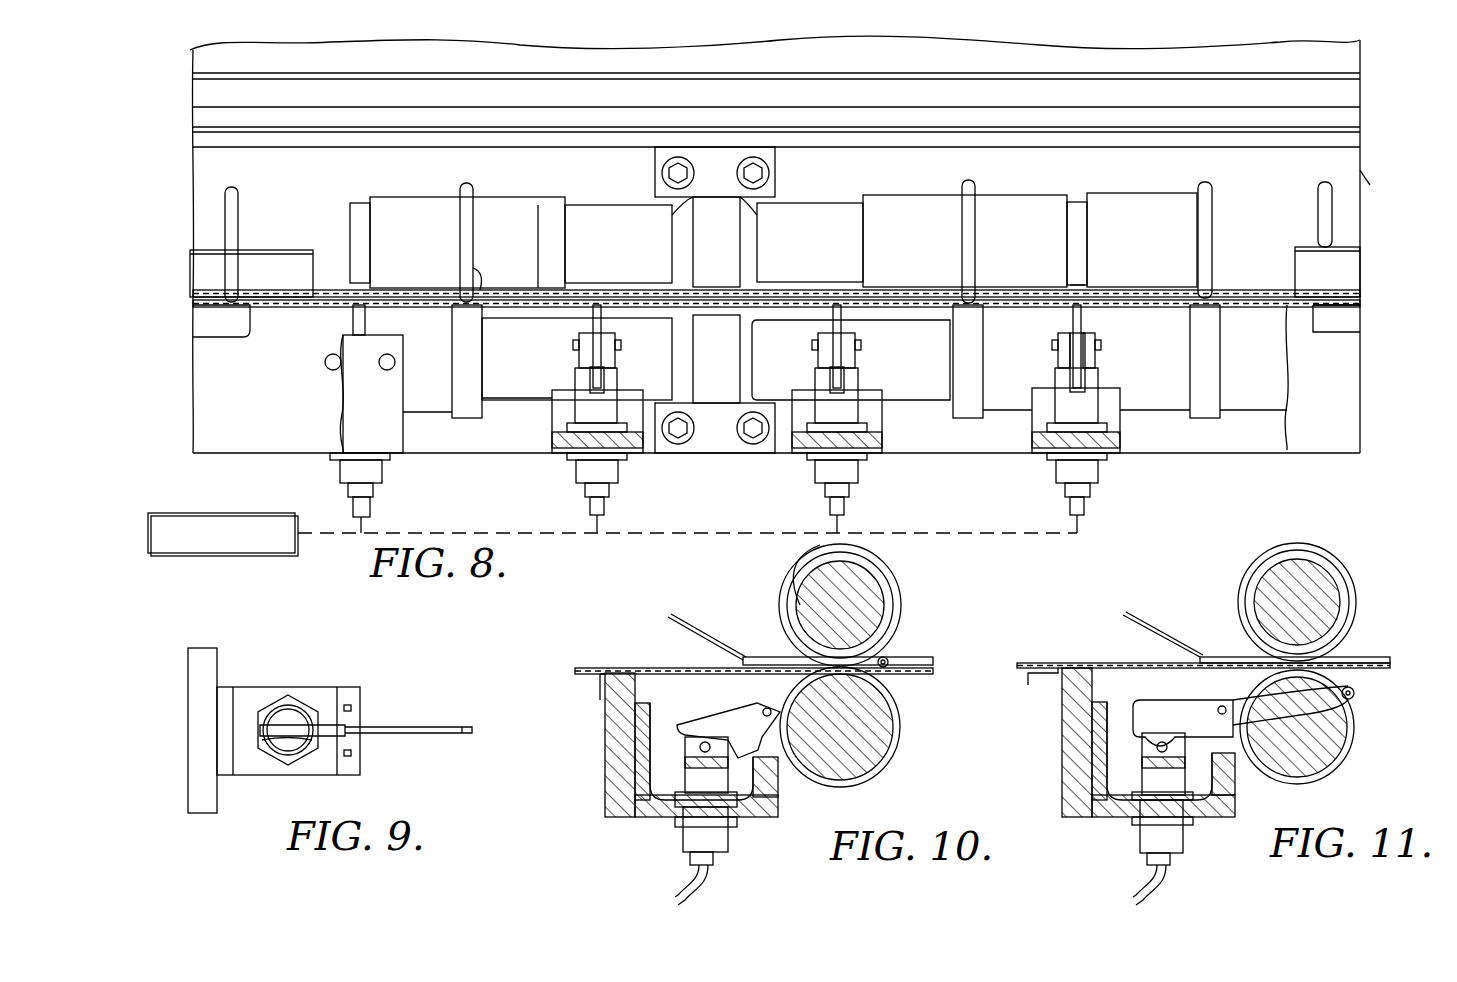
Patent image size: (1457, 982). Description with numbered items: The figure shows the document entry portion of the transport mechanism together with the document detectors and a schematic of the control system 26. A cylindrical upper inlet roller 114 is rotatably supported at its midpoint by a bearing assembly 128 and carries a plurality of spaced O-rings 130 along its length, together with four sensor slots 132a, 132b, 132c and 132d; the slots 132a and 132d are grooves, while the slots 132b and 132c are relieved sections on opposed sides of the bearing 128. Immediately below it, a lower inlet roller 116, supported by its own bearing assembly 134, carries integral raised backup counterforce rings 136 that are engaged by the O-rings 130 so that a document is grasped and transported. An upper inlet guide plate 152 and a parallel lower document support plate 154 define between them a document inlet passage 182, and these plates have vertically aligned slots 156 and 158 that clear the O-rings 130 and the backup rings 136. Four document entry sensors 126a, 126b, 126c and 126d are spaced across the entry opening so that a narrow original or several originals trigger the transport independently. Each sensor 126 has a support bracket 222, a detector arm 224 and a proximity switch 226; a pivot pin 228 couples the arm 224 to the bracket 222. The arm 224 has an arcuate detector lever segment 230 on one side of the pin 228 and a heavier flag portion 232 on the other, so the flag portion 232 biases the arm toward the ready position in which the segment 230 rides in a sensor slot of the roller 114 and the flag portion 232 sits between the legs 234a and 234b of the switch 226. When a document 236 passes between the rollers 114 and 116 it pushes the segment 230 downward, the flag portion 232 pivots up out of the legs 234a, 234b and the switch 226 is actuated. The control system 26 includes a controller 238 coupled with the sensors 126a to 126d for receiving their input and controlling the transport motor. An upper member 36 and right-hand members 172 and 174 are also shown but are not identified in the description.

In FIG. 8, the control system 26 is at (270, 560).
In FIG. 8, the frame 36 is at (1343, 58).
In FIG. 8, the upper inlet roller 114 is at (538, 205).
In FIG. 10, the upper inlet roller 114 is at (860, 606).
In FIG. 11, the upper inlet roller 114 is at (1275, 590).
In FIG. 8, the lower inlet roller 116 is at (430, 415).
In FIG. 10, the lower inlet roller 116 is at (855, 750).
In FIG. 11, the lower inlet roller 116 is at (1315, 760).
In FIG. 9, the document entry detector 126 is at (344, 736).
In FIG. 10, the document entry detector 126 is at (677, 835).
In FIG. 11, the document entry detector 126 is at (1135, 848).
In FIG. 8, the document entry sensor 126a is at (338, 470).
In FIG. 8, the document entry sensor 126b is at (578, 470).
In FIG. 8, the document entry sensor 126c is at (813, 470).
In FIG. 8, the document entry sensor 126d is at (1079, 392).
In FIG. 8, the bearing assembly 128 is at (722, 268).
In FIG. 8, the O-rings 130 is at (232, 188).
In FIG. 10, the O-rings 130 is at (868, 560).
In FIG. 11, the O-rings 130 is at (1350, 585).
In FIG. 8, the sensor slot 132a is at (362, 200).
In FIG. 10, the sensor slot 132a is at (800, 605).
In FIG. 8, the sensor slot 132b is at (605, 203).
In FIG. 8, the sensor slot 132c is at (830, 203).
In FIG. 8, the sensor slot 132d is at (1075, 200).
In FIG. 8, the bearing assembly 134 is at (705, 420).
In FIG. 8, the backup counterforce rings 136 is at (468, 420).
In FIG. 10, the backup counterforce rings 136 is at (900, 727).
In FIG. 11, the backup counterforce rings 136 is at (1355, 740).
In FIG. 8, the upper inlet guide plate 152 is at (250, 266).
In FIG. 10, the upper inlet guide plate 152 is at (680, 628).
In FIG. 11, the upper inlet guide plate 152 is at (1145, 615).
In FIG. 8, the lower inlet document support plate 154 is at (272, 310).
In FIG. 10, the lower inlet document support plate 154 is at (640, 672).
In FIG. 11, the lower inlet document support plate 154 is at (1090, 702).
In FIG. 8, the slots 156 is at (478, 272).
In FIG. 8, the slots 158 is at (472, 315).
In FIG. 8, the right side plate 172 is at (1366, 178).
In FIG. 8, the lower right plate 174 is at (1274, 445).
In FIG. 8, the document inlet passage 182 is at (1115, 296).
In FIG. 8, the support bracket 222 is at (1033, 445).
In FIG. 9, the support bracket 222 is at (355, 762).
In FIG. 10, the support bracket 222 is at (780, 800).
In FIG. 11, the support bracket 222 is at (1225, 797).
In FIG. 8, the detector arm 224 is at (1073, 335).
In FIG. 9, the detector arm 224 is at (328, 730).
In FIG. 10, the detector arm 224 is at (748, 712).
In FIG. 11, the detector arm 224 is at (1195, 705).
In FIG. 8, the proximity switch 226 is at (1095, 405).
In FIG. 9, the proximity switch 226 is at (292, 716).
In FIG. 10, the proximity switch 226 is at (680, 772).
In FIG. 11, the proximity switch 226 is at (1145, 765).
In FIG. 8, the pivot pin 228 is at (1100, 345).
In FIG. 9, the pivot pin 228 is at (351, 710).
In FIG. 10, the pivot pin 228 is at (767, 708).
In FIG. 11, the pivot pin 228 is at (1222, 706).
In FIG. 8, the detector lever segment 230 is at (1073, 286).
In FIG. 9, the detector lever segment 230 is at (440, 727).
In FIG. 10, the detector lever segment 230 is at (890, 660).
In FIG. 11, the detector lever segment 230 is at (1355, 697).
In FIG. 9, the flag portion 232 is at (292, 742).
In FIG. 10, the flag portion 232 is at (692, 728).
In FIG. 11, the flag portion 232 is at (1152, 712).
In FIG. 8, the leg 234a is at (1060, 378).
In FIG. 9, the leg 234a is at (280, 720).
In FIG. 10, the leg 234a is at (640, 765).
In FIG. 11, the leg 234a is at (1143, 747).
In FIG. 8, the leg 234b is at (1095, 378).
In FIG. 9, the leg 234b is at (272, 745).
In FIG. 11, the document 236 is at (1070, 668).
In FIG. 8, the controller 238 is at (226, 513).